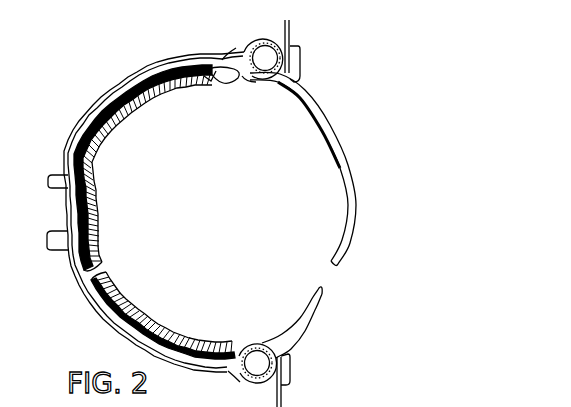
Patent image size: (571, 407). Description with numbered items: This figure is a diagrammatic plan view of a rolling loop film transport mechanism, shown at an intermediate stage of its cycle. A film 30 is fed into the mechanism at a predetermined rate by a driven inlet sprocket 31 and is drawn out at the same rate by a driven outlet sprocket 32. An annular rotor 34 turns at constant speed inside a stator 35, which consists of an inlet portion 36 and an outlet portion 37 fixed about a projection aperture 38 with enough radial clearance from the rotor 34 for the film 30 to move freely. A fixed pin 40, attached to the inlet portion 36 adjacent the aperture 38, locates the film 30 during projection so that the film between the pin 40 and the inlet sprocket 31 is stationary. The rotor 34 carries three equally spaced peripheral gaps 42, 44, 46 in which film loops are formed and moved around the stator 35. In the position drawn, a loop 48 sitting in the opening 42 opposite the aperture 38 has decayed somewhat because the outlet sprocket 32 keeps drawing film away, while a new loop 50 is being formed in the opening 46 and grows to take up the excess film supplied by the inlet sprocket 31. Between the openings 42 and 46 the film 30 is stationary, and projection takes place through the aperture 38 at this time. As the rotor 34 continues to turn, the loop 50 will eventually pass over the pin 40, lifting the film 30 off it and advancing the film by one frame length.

The film 30 is at (290, 30).
The inlet sprocket 31 is at (257, 52).
The outlet sprocket 32 is at (263, 360).
The rotor 34 is at (345, 135).
The stator 35 is at (125, 212).
The inlet portion 36 is at (100, 104).
The outlet portion 37 is at (98, 313).
The projection aperture 38 is at (58, 211).
The fixed pin 40 is at (84, 180).
The peripheral gap 42 is at (108, 267).
The peripheral gap 44 is at (335, 283).
The peripheral gap 46 is at (212, 87).
The loop 48 is at (104, 284).
The loop 50 is at (226, 81).